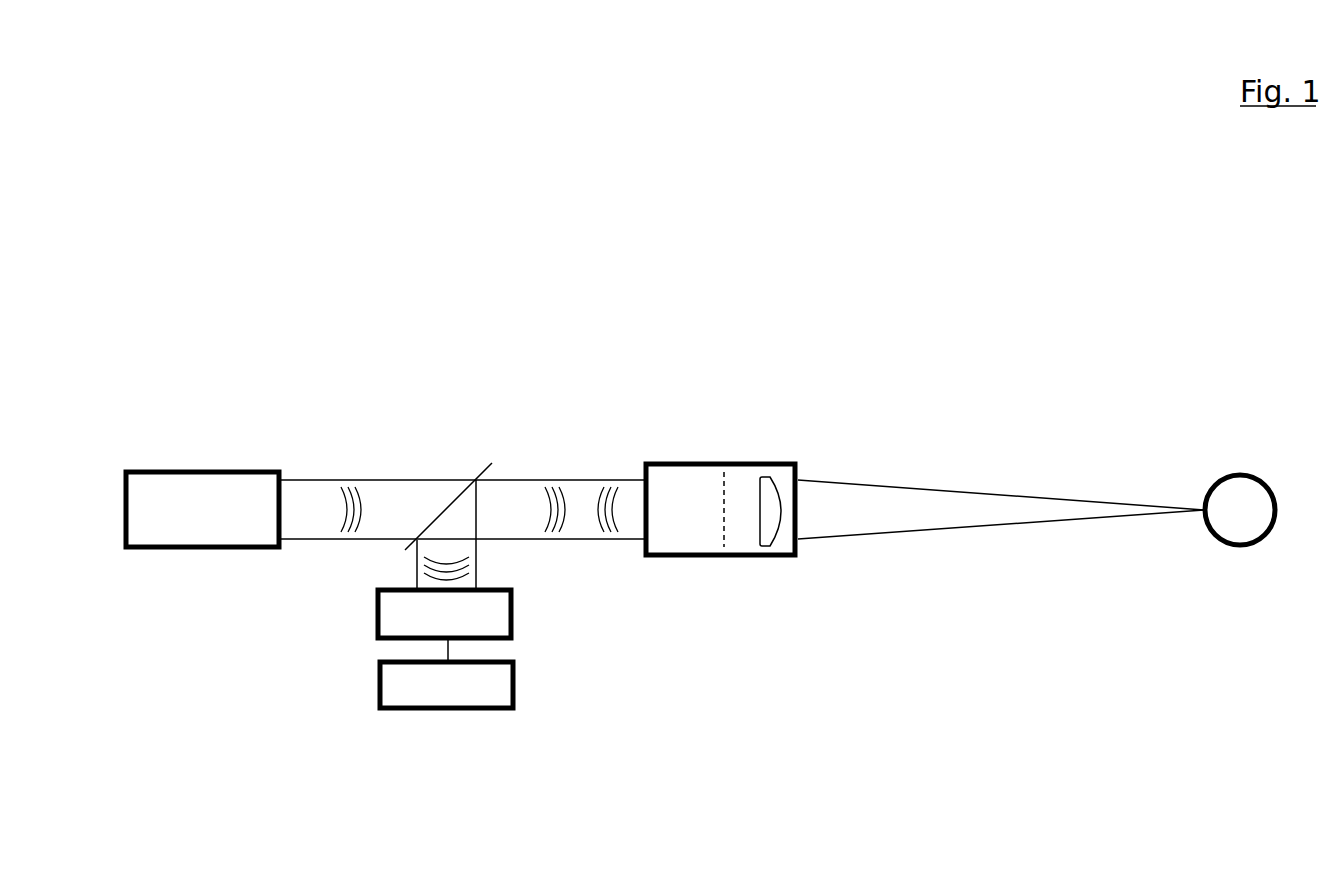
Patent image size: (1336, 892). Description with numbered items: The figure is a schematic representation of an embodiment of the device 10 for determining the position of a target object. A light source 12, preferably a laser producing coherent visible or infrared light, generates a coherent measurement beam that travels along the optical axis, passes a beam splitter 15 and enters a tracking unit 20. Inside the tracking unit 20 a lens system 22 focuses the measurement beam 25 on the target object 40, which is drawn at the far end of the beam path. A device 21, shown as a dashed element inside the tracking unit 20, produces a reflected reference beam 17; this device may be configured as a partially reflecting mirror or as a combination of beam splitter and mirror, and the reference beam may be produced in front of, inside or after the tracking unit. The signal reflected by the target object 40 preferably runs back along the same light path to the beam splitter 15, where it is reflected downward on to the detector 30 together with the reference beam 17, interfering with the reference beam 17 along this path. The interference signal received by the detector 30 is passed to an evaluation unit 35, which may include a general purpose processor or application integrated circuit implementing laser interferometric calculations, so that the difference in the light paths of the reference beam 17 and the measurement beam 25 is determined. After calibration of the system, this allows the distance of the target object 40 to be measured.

The device 10 is at (196, 325).
The light source 12 is at (226, 488).
The beam splitter 15 is at (472, 490).
The reference beam 17 is at (601, 500).
The tracking unit 20 is at (751, 492).
The device for producing a reflected reference beam 21 is at (723, 498).
The lens system 22 is at (775, 488).
The measurement beam 25 is at (1032, 506).
The detector 30 is at (503, 618).
The evaluation unit 35 is at (490, 690).
The target object 40 is at (1240, 508).